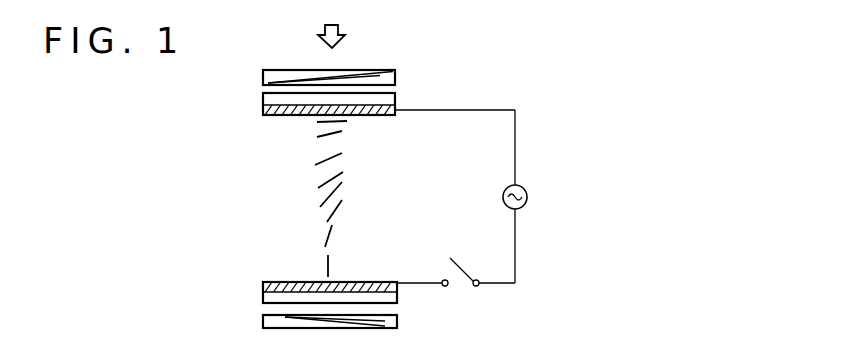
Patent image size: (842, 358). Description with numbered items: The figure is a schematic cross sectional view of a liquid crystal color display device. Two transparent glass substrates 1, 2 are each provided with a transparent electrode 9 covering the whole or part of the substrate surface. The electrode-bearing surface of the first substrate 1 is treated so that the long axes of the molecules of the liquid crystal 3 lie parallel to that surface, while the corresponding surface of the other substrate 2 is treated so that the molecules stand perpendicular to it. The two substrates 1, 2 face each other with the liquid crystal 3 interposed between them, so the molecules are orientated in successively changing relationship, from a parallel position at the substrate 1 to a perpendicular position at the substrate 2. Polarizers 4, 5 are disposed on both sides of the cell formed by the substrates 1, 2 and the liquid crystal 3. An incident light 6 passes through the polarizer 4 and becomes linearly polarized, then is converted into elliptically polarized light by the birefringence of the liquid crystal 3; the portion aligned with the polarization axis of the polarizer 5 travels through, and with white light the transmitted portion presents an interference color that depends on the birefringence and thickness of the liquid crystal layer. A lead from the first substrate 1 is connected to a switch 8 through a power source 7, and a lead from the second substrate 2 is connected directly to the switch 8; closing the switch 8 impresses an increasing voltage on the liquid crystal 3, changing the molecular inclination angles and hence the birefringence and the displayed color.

The transparent glass substrate 1 is at (263, 100).
The transparent glass substrate 2 is at (263, 298).
The liquid crystal 3 is at (313, 122).
The polarizer 4 is at (263, 76).
The polarizer 5 is at (263, 322).
The light 6 is at (340, 30).
The power source 7 is at (504, 199).
The switch 8 is at (460, 265).
The transparent electrode 9 is at (263, 110).